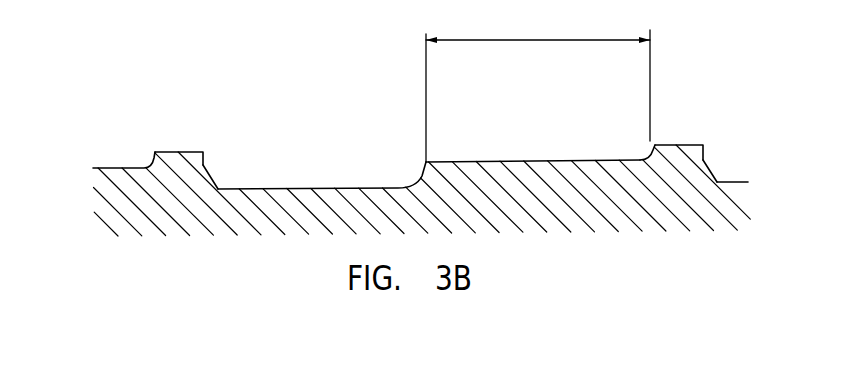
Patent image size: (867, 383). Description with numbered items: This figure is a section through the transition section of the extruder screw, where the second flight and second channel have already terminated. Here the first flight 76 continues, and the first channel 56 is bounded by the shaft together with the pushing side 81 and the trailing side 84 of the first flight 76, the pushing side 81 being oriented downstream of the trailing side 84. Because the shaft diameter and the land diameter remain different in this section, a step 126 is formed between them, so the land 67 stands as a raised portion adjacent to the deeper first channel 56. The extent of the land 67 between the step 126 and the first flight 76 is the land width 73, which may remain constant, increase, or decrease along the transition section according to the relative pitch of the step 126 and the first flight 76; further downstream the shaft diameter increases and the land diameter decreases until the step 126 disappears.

The first channel 56 is at (414, 88).
The land 67 is at (500, 162).
The land width 73 is at (545, 40).
The first flight 76 is at (167, 152).
The pushing side 81 is at (147, 161).
The trailing side 84 is at (204, 165).
The step 126 is at (417, 170).